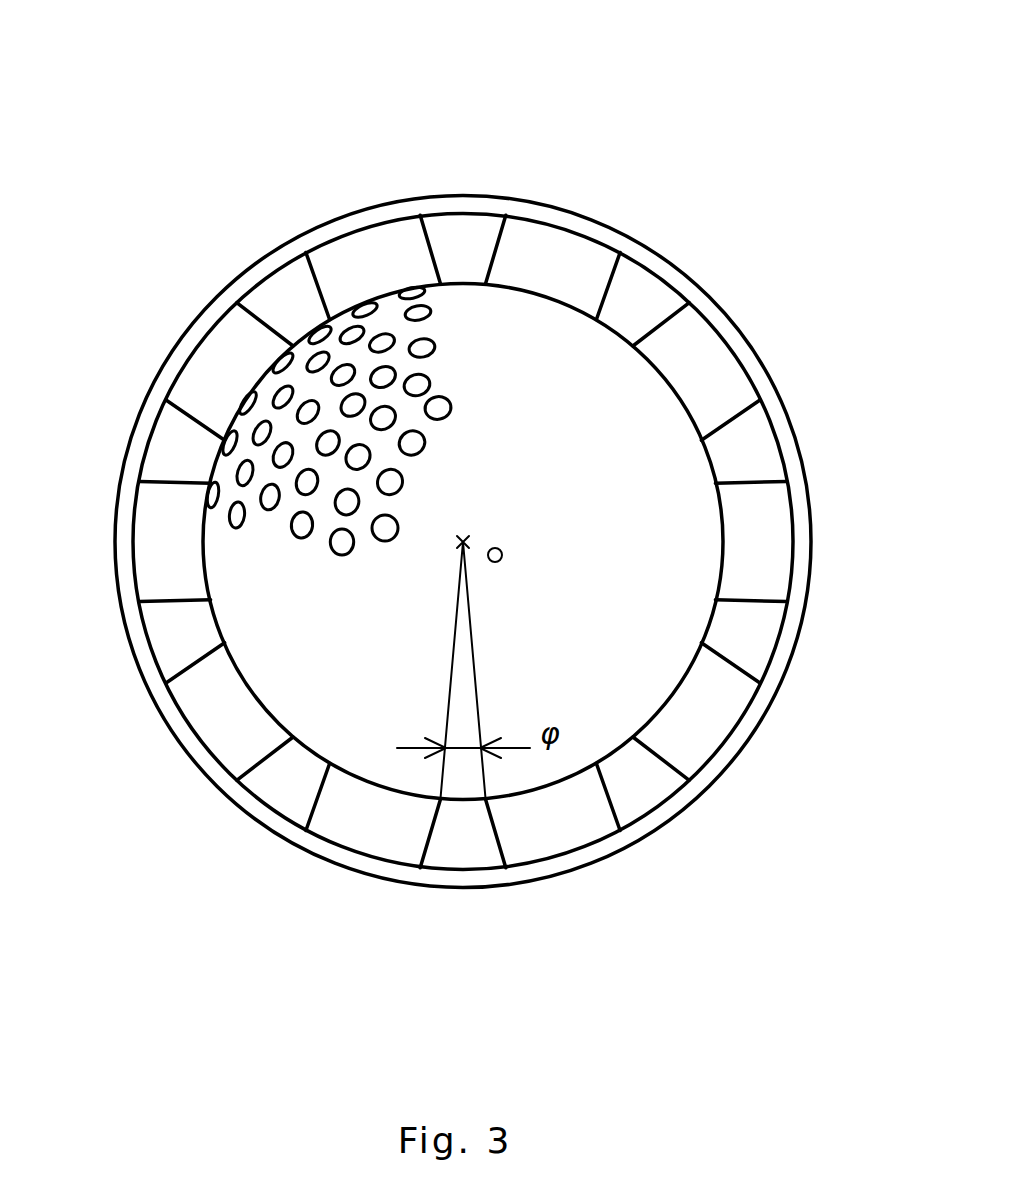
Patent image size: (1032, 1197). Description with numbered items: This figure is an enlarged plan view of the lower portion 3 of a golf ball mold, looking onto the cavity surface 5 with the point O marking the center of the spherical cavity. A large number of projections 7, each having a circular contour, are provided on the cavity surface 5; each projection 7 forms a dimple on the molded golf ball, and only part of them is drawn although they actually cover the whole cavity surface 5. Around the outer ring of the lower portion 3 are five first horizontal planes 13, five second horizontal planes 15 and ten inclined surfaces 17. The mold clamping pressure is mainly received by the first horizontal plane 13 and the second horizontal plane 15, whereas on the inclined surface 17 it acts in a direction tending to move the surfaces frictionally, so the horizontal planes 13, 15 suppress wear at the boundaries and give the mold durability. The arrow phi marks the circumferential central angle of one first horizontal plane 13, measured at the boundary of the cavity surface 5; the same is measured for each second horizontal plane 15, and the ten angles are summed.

The lower portion 3 is at (688, 51).
The cavity surface 5 is at (608, 598).
The projections 7 is at (445, 405).
The first horizontal plane 13 is at (292, 288).
The second horizontal plane 15 is at (470, 237).
The inclined surface 17 is at (380, 243).